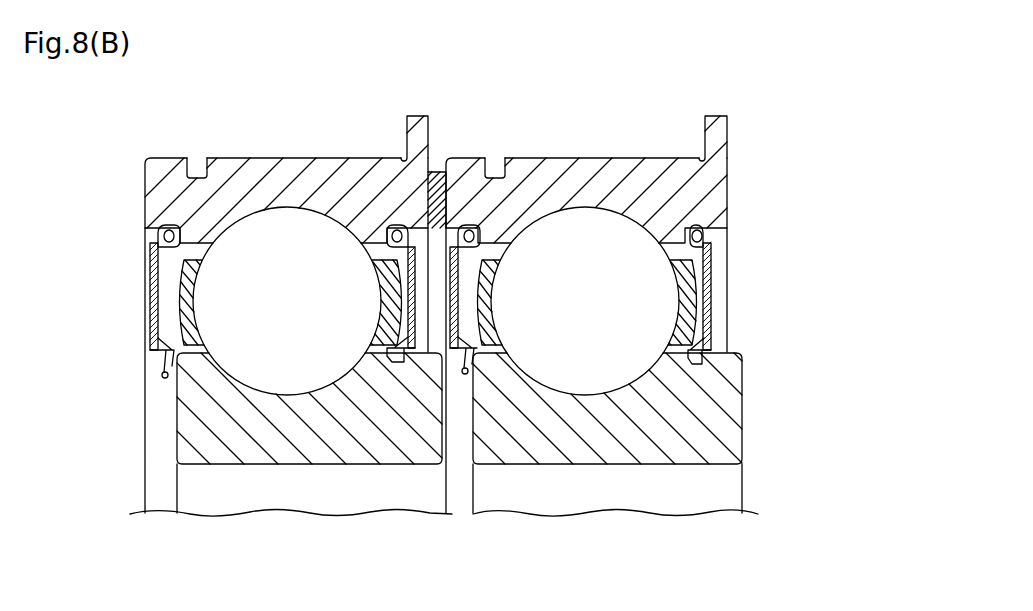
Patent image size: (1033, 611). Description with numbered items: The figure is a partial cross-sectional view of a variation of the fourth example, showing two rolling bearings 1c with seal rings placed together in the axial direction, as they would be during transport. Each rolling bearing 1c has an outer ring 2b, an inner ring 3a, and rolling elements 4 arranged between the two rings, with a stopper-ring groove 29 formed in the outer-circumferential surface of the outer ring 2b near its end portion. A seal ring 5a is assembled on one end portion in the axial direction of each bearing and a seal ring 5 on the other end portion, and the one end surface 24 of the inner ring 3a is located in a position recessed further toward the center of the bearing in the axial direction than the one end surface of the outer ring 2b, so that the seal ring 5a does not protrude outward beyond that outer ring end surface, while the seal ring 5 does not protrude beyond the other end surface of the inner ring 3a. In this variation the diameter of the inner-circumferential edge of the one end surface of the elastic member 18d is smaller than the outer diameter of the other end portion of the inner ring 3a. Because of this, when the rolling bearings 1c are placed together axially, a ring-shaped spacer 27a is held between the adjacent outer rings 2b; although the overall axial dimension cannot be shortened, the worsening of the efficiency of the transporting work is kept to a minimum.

The rolling bearing with seal ring 1c is at (297, 150).
The outer ring 2b is at (257, 172).
The inner ring 3a is at (325, 418).
The rolling element 4 is at (310, 243).
The seal ring 5 is at (399, 298).
The seal ring 5a is at (143, 306).
The elastic member 18d is at (150, 318).
The one end surface of the inner ring 24 is at (177, 412).
The ring-shaped spacer 27a is at (438, 168).
The stopper-ring groove 29 is at (202, 166).